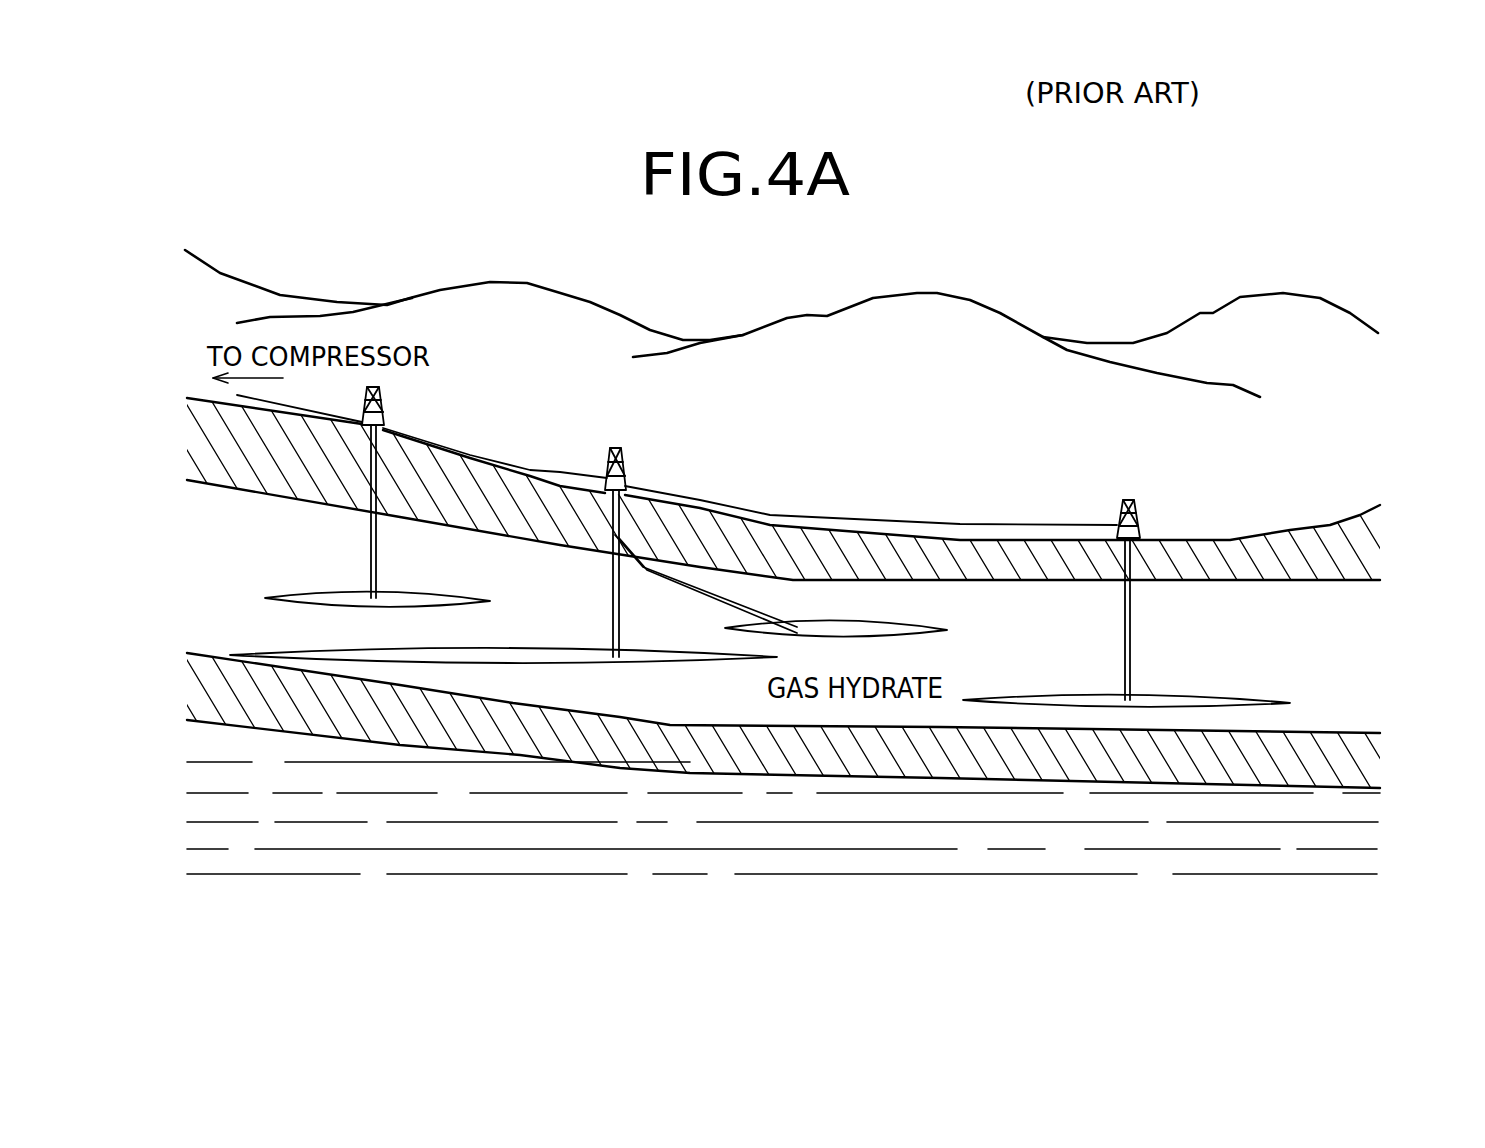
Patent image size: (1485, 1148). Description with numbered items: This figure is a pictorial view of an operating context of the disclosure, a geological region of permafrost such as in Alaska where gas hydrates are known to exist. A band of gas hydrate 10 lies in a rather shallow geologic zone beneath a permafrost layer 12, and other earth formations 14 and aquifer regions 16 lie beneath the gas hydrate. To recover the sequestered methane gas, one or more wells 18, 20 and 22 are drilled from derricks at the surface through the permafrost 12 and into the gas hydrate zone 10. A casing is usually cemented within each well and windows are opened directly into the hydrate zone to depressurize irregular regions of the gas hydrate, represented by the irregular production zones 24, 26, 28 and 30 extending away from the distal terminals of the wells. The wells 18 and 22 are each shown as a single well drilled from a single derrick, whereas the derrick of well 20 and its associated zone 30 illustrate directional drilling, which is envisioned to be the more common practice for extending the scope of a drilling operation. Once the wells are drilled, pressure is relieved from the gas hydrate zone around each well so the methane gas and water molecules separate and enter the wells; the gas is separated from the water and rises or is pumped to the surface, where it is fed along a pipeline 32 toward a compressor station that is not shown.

The gas hydrate 10 is at (1210, 654).
The permafrost layer 12 is at (200, 450).
The earth formations 14 is at (1362, 766).
The aquifer regions 16 is at (207, 832).
The well 18 is at (1140, 513).
The well 20 is at (624, 462).
The well 22 is at (384, 402).
The production zone 24 is at (1243, 697).
The production zone 26 is at (603, 663).
The production zone 28 is at (301, 594).
The production zone 30 is at (893, 621).
The pipeline 32 is at (768, 512).